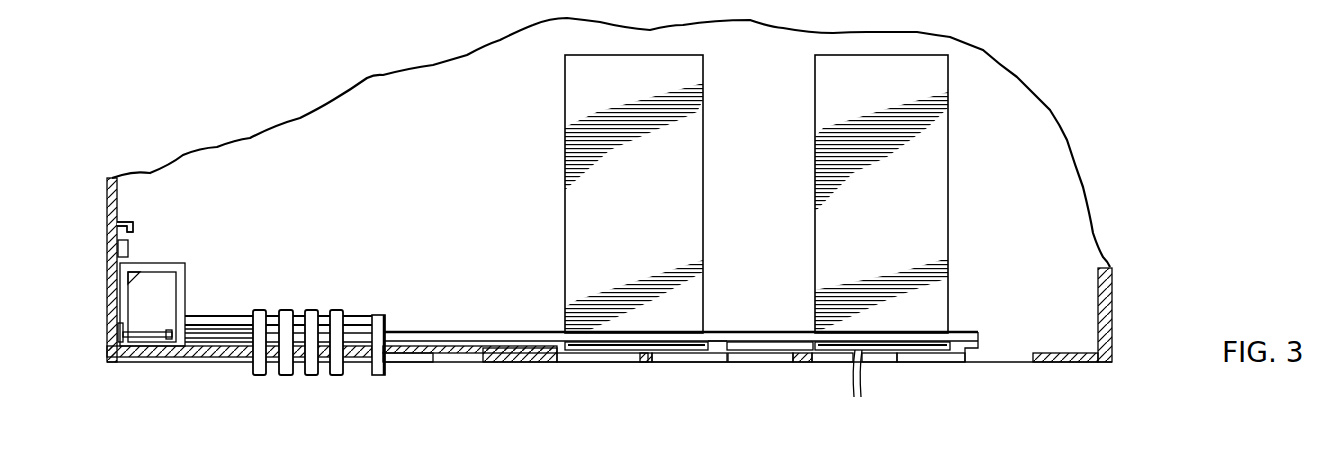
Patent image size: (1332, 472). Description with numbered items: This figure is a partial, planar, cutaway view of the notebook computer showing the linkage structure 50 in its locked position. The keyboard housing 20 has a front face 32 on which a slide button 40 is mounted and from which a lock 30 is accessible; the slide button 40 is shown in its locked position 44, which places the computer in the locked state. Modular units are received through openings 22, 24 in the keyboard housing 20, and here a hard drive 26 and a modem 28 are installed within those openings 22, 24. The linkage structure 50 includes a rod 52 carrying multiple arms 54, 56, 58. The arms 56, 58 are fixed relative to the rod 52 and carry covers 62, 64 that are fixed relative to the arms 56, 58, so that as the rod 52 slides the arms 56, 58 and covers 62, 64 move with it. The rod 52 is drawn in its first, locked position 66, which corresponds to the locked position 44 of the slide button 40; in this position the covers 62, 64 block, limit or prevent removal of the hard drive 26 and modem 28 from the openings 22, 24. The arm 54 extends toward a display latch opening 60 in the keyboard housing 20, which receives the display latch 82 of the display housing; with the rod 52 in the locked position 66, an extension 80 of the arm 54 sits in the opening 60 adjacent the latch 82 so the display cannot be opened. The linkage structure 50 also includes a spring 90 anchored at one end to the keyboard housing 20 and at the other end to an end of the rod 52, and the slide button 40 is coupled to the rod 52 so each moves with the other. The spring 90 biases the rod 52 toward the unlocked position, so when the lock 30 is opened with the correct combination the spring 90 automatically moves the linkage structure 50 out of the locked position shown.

The keyboard housing 20 is at (1113, 316).
The opening 22 is at (608, 368).
The opening 24 is at (828, 369).
The hard drive 26 is at (647, 185).
The modem 28 is at (899, 197).
The lock 30 is at (350, 292).
The front face 32 is at (1053, 362).
The slide button 40 is at (383, 378).
The locked position 44 is at (425, 370).
The linkage structure 50 is at (236, 234).
The rod 52 is at (424, 332).
The arm 54 is at (186, 283).
The arm 56 is at (742, 366).
The arm 58 is at (978, 345).
The display latch opening 60 is at (136, 251).
The cover 62 is at (673, 366).
The cover 64 is at (932, 360).
The locked position 66 is at (737, 304).
The extension 80 is at (170, 263).
The display latch 82 is at (107, 244).
The spring 90 is at (153, 328).